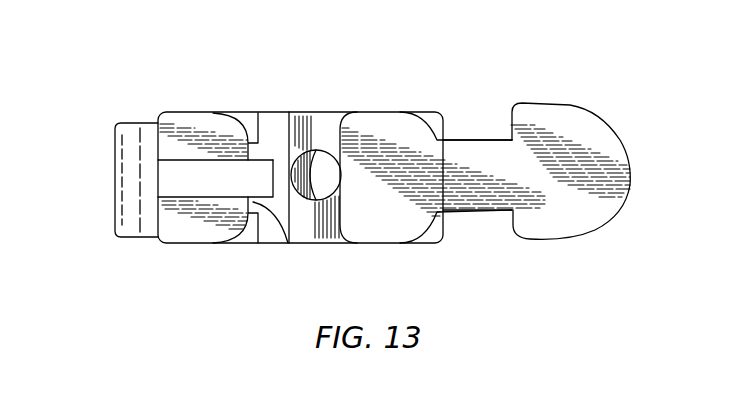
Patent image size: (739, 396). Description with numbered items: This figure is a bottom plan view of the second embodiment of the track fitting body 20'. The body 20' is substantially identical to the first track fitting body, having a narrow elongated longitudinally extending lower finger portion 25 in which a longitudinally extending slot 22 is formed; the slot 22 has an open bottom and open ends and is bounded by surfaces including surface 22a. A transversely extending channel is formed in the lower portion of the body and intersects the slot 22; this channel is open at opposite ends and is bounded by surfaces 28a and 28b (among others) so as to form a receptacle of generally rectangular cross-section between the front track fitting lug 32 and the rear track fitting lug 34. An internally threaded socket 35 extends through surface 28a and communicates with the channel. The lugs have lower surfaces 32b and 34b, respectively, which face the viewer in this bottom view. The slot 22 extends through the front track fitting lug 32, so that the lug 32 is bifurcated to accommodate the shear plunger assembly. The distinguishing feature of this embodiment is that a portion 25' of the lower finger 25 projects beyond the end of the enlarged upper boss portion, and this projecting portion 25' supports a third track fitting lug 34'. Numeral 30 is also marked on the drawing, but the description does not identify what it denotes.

The track fitting body 20' is at (300, 148).
The slot 22 is at (200, 180).
The slot bounding surface 22a is at (178, 172).
The lower finger portion 25 is at (271, 242).
The projecting finger portion 25' is at (477, 142).
The channel bounding surface 28a is at (312, 125).
The channel bounding surface 28b is at (277, 127).
The upper jaw block 30 is at (137, 133).
The front track fitting lug 32 is at (160, 142).
The lower surface of front track fitting lug 32b is at (182, 230).
The track fitting lug 34 is at (442, 154).
The third track fitting lug 34' is at (570, 135).
The lower surface of track fitting lug 34b is at (390, 218).
The internally threaded socket 35 is at (325, 183).